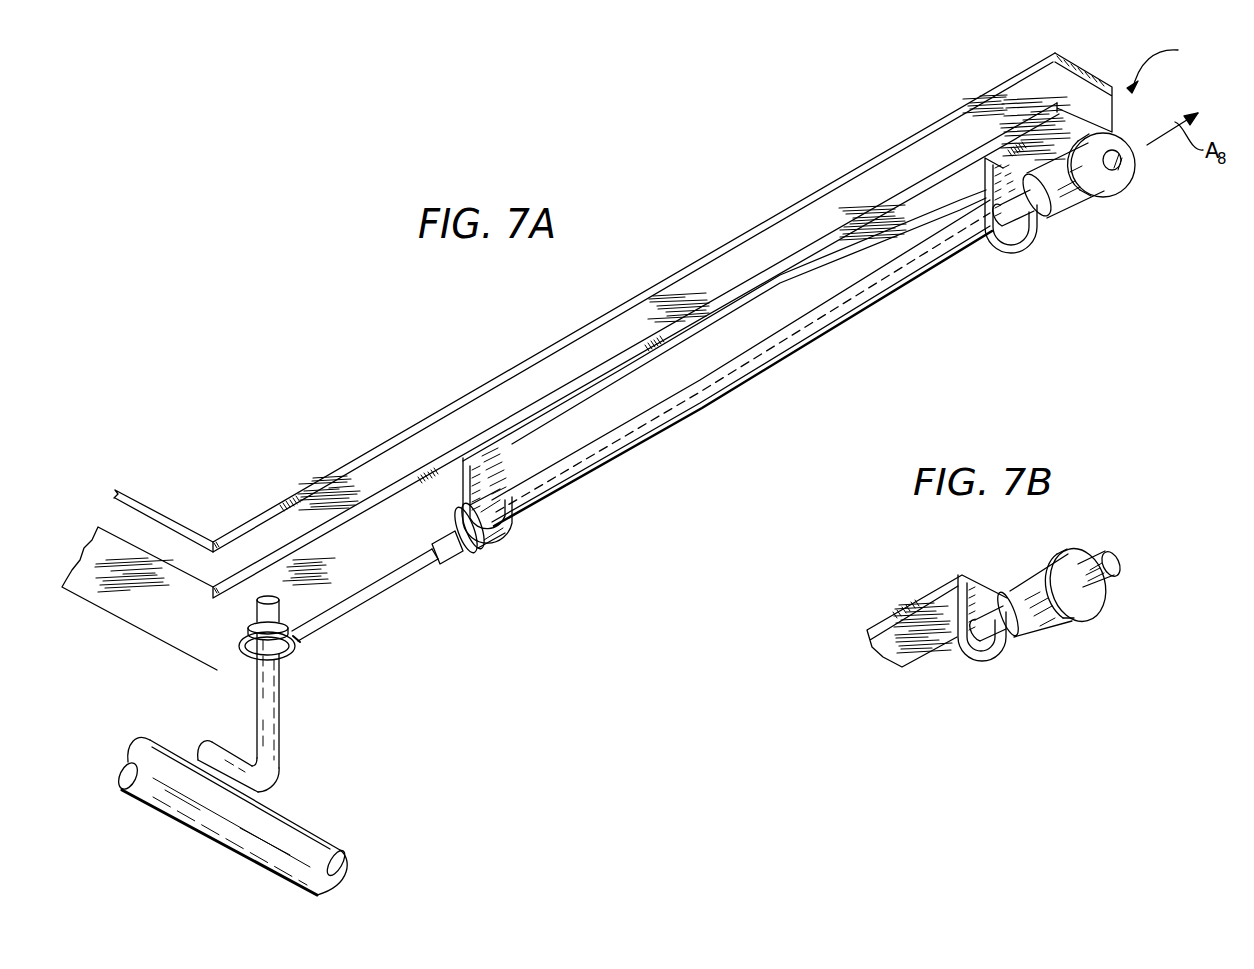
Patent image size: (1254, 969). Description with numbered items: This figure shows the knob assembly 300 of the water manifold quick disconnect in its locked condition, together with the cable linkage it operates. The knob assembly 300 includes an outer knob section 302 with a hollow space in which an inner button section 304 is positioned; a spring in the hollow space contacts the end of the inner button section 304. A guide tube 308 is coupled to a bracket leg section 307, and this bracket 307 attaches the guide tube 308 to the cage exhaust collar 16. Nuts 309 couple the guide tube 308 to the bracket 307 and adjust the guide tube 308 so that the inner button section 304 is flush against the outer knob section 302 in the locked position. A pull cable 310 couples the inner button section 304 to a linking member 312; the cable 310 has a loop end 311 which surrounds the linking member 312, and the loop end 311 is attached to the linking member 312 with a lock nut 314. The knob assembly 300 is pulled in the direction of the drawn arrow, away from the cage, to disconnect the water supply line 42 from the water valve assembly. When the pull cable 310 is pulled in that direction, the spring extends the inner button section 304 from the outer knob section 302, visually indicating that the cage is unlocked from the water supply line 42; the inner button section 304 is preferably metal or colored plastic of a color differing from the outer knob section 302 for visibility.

In FIG. 7A, the cage exhaust collar 16 is at (867, 167).
In FIG. 7A, the water supply line 42 is at (307, 837).
In FIG. 7A, the knob assembly 300 is at (1168, 67).
In FIG. 7A, the outer knob section 302 is at (1105, 197).
In FIG. 7B, the outer knob section 302 is at (1050, 572).
In FIG. 7A, the inner button section 304 is at (1120, 163).
In FIG. 7B, the inner button section 304 is at (1112, 578).
In FIG. 7A, the bracket leg section 307 is at (622, 407).
In FIG. 7A, the guide tube 308 is at (780, 362).
In FIG. 7A, the nuts 309 is at (528, 523).
In FIG. 7A, the pull cable 310 is at (383, 583).
In FIG. 7A, the loop end 311 is at (294, 638).
In FIG. 7A, the linking member 312 is at (280, 735).
In FIG. 7A, the lock nut 314 is at (246, 641).